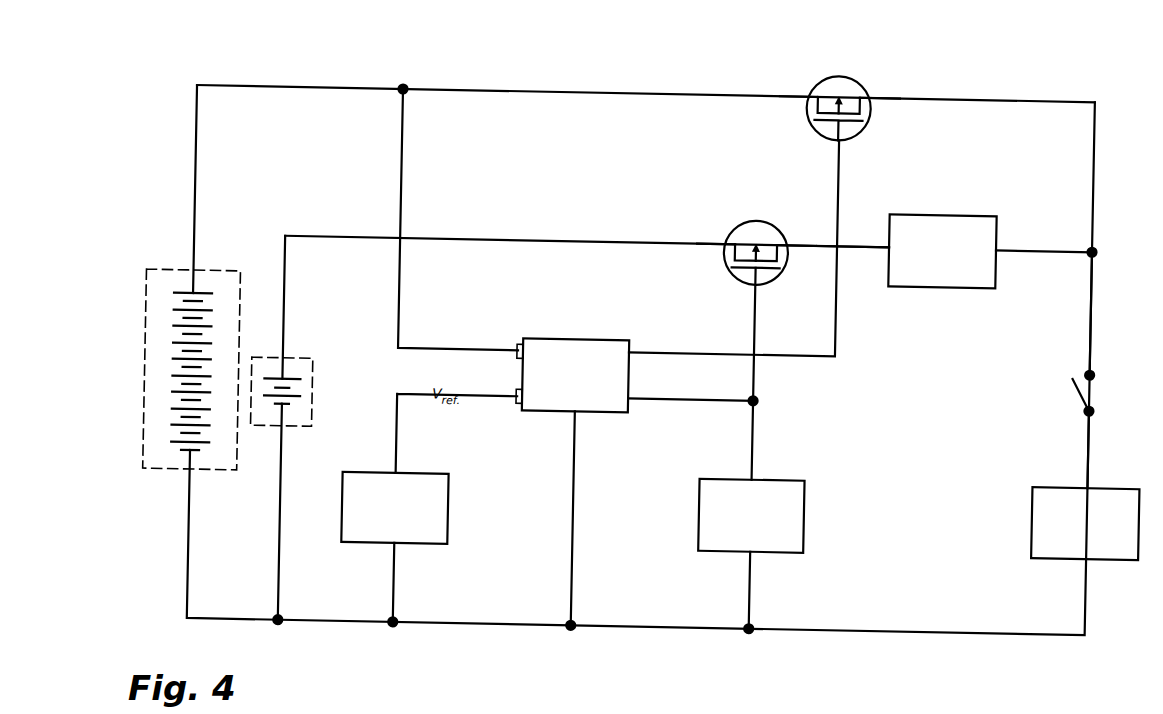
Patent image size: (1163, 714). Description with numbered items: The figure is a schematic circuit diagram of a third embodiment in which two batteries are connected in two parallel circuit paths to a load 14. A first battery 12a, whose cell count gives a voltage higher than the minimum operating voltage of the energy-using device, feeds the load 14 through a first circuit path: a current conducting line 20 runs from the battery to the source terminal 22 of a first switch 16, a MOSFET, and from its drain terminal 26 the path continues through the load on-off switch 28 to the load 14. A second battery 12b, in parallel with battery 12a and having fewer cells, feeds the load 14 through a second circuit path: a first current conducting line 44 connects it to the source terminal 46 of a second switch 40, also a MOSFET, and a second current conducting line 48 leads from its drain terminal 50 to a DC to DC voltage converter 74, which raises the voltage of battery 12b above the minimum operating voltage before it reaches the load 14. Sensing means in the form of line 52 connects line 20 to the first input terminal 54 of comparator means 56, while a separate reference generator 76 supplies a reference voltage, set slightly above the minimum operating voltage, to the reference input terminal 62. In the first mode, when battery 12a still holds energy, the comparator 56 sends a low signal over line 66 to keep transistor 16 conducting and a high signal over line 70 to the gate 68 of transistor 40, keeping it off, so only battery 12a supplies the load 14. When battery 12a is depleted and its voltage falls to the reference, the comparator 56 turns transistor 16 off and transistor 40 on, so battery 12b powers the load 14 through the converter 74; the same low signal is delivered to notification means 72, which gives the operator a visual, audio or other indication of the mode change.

The first battery 12a is at (150, 274).
The second battery 12b is at (318, 360).
The load 14 is at (1040, 475).
The first switch 16 is at (844, 69).
The current conducting line 20 is at (586, 89).
The source terminal 22 is at (815, 86).
The drain terminal 26 is at (866, 87).
The load on-off switch 28 is at (1079, 387).
The second switch 40 is at (760, 214).
The first current conducting line 44 is at (490, 238).
The source terminal 46 is at (737, 225).
The second current conducting line 48 is at (855, 238).
The drain terminal 50 is at (782, 228).
The sensing means 52 is at (403, 152).
The first input terminal 54 is at (520, 345).
The comparator means 56 is at (634, 336).
The reference input terminal 62 is at (521, 403).
The current conducting line 66 is at (840, 348).
The gate 68 is at (767, 268).
The current conducting line 70 is at (759, 374).
The notification means 72 is at (812, 473).
The DC to DC voltage converter 74 is at (999, 205).
The reference generator 76 is at (456, 473).